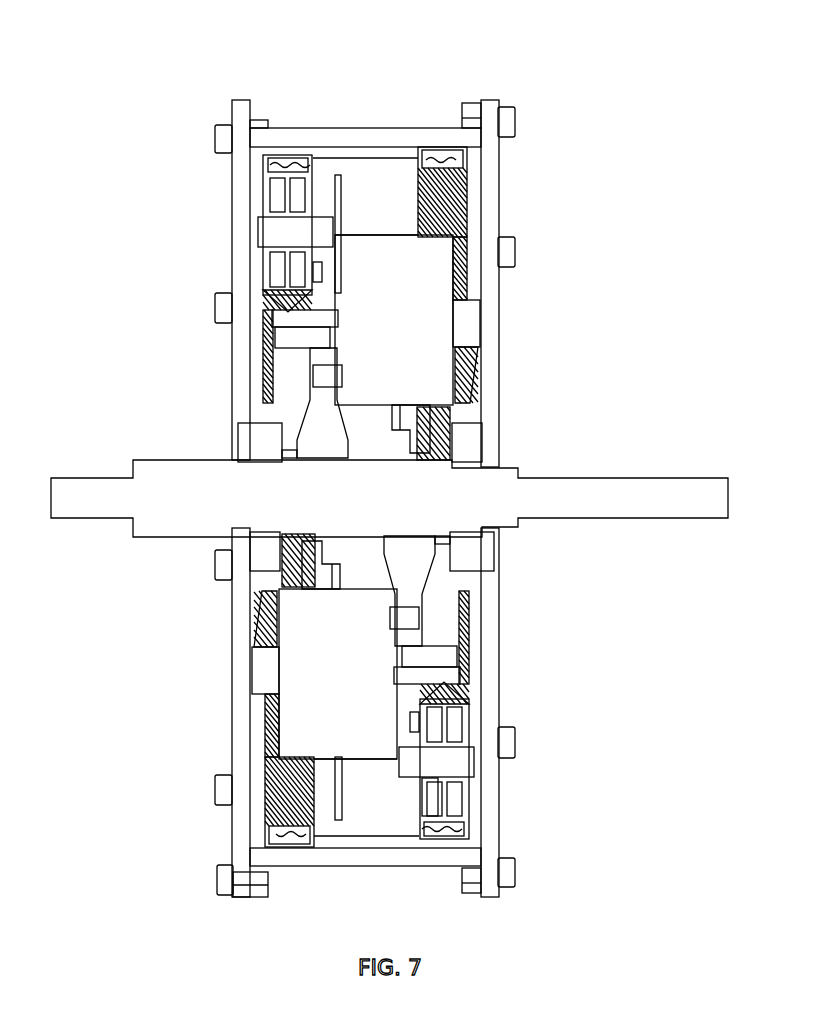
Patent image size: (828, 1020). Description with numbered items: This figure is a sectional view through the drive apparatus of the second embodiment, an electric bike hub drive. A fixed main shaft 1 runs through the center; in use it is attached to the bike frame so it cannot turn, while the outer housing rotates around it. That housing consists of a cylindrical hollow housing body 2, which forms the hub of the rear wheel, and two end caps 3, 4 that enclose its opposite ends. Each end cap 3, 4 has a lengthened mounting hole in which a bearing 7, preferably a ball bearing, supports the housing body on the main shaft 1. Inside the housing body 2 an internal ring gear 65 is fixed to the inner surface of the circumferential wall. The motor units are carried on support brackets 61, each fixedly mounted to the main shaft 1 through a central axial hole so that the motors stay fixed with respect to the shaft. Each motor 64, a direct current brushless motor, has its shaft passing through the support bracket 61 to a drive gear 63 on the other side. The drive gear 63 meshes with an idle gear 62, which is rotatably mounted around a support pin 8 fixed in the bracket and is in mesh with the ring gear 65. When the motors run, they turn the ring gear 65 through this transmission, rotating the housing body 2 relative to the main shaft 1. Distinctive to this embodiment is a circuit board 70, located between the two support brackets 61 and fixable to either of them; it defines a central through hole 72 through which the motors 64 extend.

The main shaft 1 is at (495, 495).
The housing body 2 is at (357, 148).
The end cap 3 is at (242, 743).
The end cap 4 is at (487, 343).
The bearing 7 is at (473, 442).
The support pin 8 is at (280, 230).
The support bracket 61 is at (320, 420).
The idle gear 62 is at (265, 270).
The drive gear 63 is at (273, 338).
The motor 64 is at (423, 323).
The internal ring gear 65 is at (285, 150).
The circuit board 70 is at (340, 218).
The central through hole 72 is at (343, 762).